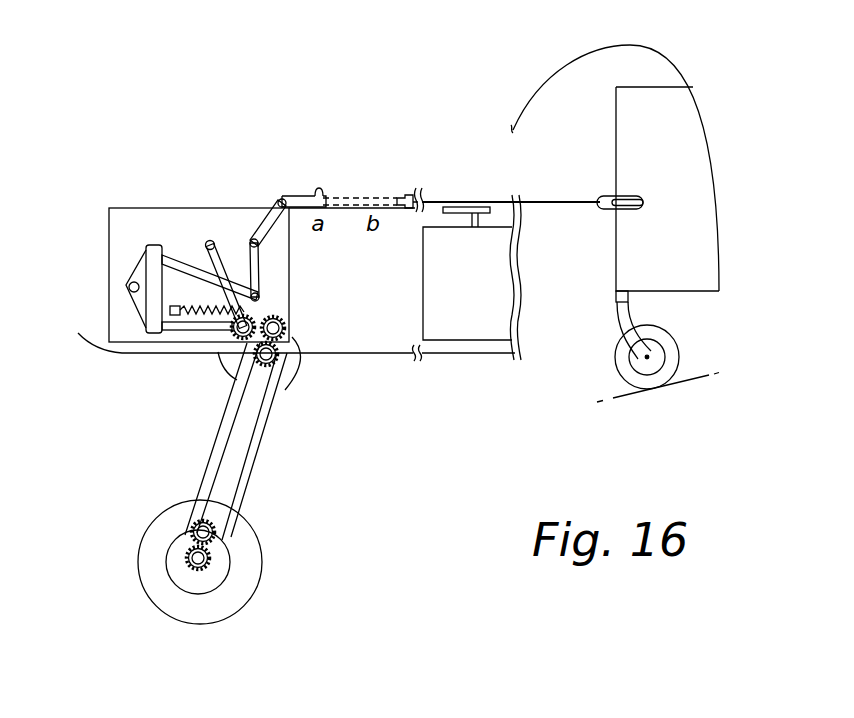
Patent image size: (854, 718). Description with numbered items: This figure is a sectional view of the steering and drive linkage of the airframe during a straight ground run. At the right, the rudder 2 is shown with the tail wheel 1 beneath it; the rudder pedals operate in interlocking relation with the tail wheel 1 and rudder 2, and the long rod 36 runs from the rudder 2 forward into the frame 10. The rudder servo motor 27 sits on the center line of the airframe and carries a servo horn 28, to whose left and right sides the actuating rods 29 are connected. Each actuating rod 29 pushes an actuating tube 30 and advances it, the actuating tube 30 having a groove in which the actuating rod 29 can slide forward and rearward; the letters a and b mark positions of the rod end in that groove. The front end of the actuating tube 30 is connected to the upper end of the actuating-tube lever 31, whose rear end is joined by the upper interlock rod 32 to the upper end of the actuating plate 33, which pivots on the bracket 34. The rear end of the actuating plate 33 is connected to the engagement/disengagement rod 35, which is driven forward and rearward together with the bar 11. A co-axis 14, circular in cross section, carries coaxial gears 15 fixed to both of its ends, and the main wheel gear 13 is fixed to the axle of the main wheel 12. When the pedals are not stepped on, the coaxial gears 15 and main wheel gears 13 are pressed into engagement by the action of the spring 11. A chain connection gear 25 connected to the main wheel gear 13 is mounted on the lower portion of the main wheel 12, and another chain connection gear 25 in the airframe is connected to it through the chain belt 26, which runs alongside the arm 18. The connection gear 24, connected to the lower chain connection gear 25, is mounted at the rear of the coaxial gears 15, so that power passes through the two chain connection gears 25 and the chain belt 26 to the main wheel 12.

The tail wheel 1 is at (672, 355).
The rudder 2 is at (680, 182).
The frame 10 is at (167, 351).
The spring 11 is at (197, 332).
The main wheel 12 is at (222, 598).
The main wheel gear 13 is at (210, 565).
The co-axis 14 is at (240, 314).
The coaxial gear 15 is at (274, 315).
The arm 18 is at (227, 473).
The connection gear 24 is at (297, 341).
The chain connection gear 25 is at (265, 365).
The chain belt 26 is at (258, 448).
The rudder servo motor 27 is at (477, 285).
The servo horn 28 is at (492, 212).
The actuating rod 29 is at (320, 189).
The actuating tube 30 is at (305, 196).
The actuating-tube lever 31 is at (275, 227).
The upper interlock rod 32 is at (197, 306).
The actuating plate 33 is at (152, 245).
The pivot bracket 34 is at (133, 293).
The engagement/disengagement rod 35 is at (223, 266).
The control rod 36 is at (560, 197).